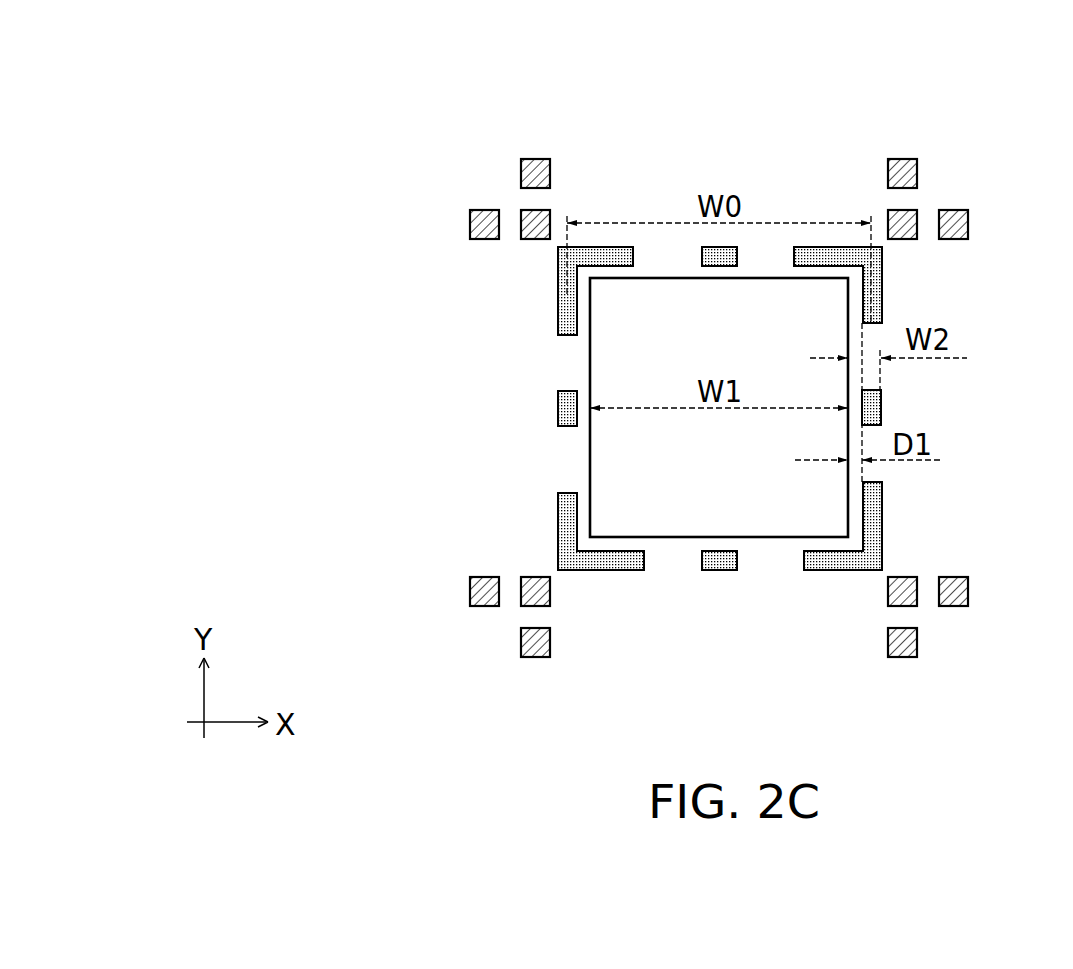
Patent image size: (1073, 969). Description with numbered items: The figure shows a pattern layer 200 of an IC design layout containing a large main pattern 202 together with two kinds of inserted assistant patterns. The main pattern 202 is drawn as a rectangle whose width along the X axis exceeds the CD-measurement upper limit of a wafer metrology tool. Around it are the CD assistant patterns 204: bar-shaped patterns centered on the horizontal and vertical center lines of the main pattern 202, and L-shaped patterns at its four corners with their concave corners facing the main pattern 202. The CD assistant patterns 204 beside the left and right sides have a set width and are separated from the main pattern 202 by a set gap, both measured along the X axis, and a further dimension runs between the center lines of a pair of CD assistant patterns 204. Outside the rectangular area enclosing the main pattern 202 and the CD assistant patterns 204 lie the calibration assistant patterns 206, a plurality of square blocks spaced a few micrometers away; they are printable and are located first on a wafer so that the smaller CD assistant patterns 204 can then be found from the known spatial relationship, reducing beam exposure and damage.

The pattern layer 200 is at (813, 115).
The main pattern 202 is at (746, 503).
The CD assistant patterns 204 is at (882, 290).
The calibration assistant patterns 206 is at (551, 173).